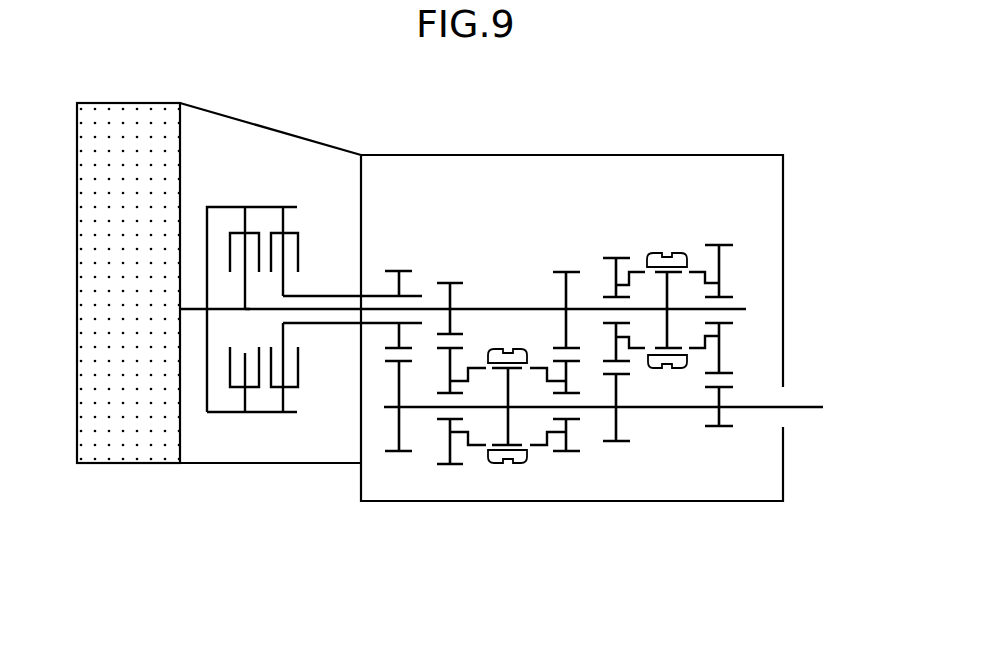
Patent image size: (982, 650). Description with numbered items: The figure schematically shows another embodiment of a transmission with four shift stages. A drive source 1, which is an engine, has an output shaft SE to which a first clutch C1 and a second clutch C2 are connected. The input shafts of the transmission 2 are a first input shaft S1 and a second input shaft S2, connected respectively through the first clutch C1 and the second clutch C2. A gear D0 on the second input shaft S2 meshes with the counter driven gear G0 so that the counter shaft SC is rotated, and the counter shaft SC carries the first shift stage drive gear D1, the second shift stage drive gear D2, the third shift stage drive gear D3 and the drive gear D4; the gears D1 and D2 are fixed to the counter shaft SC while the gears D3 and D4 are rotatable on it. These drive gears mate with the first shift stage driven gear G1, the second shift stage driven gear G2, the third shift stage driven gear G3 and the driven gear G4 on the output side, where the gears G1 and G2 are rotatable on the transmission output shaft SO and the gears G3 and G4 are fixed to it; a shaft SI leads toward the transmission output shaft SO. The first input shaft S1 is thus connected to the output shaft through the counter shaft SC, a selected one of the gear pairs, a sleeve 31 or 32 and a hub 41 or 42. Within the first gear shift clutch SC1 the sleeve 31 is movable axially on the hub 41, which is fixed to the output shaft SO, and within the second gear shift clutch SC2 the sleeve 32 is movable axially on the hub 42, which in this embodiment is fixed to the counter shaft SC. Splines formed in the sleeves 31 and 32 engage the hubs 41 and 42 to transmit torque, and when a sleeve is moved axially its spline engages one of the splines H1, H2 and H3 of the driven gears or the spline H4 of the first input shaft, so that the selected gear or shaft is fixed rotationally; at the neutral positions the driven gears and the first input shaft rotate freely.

The drive source 1 is at (128, 103).
The transmission 2 is at (406, 155).
The output shaft of the drive source SE is at (193, 309).
The first input shaft S1 is at (338, 309).
The second input shaft S2 is at (313, 296).
The first clutch C1 is at (233, 388).
The second clutch C2 is at (273, 388).
The drive gear D0 is at (397, 271).
The first shift stage drive gear D1 is at (458, 283).
The second shift stage drive gear D2 is at (573, 272).
The third shift stage drive gear D3 is at (615, 258).
The drive gear of the fourth gear pair D4 is at (723, 245).
The counter driven gear G0 is at (392, 453).
The first shift stage driven gear G1 is at (445, 467).
The second shift stage driven gear G2 is at (572, 452).
The third shift stage driven gear G3 is at (623, 442).
The driven gear of the fourth gear pair G4 is at (723, 428).
The counter shaft SC is at (512, 307).
The first gear shift clutch SC1 is at (528, 491).
The second gear shift clutch SC2 is at (689, 218).
The spline of the driven gear H1 is at (478, 447).
The spline of the driven gear H2 is at (535, 447).
The spline of the driven gear H3 is at (642, 260).
The spline of the first input shaft H4 is at (697, 260).
The sleeve 31 is at (517, 463).
The sleeve 32 is at (680, 253).
The hub 41 is at (510, 388).
The hub 42 is at (667, 290).
The intermediate shaft SI is at (663, 410).
The transmission output shaft SO is at (797, 407).